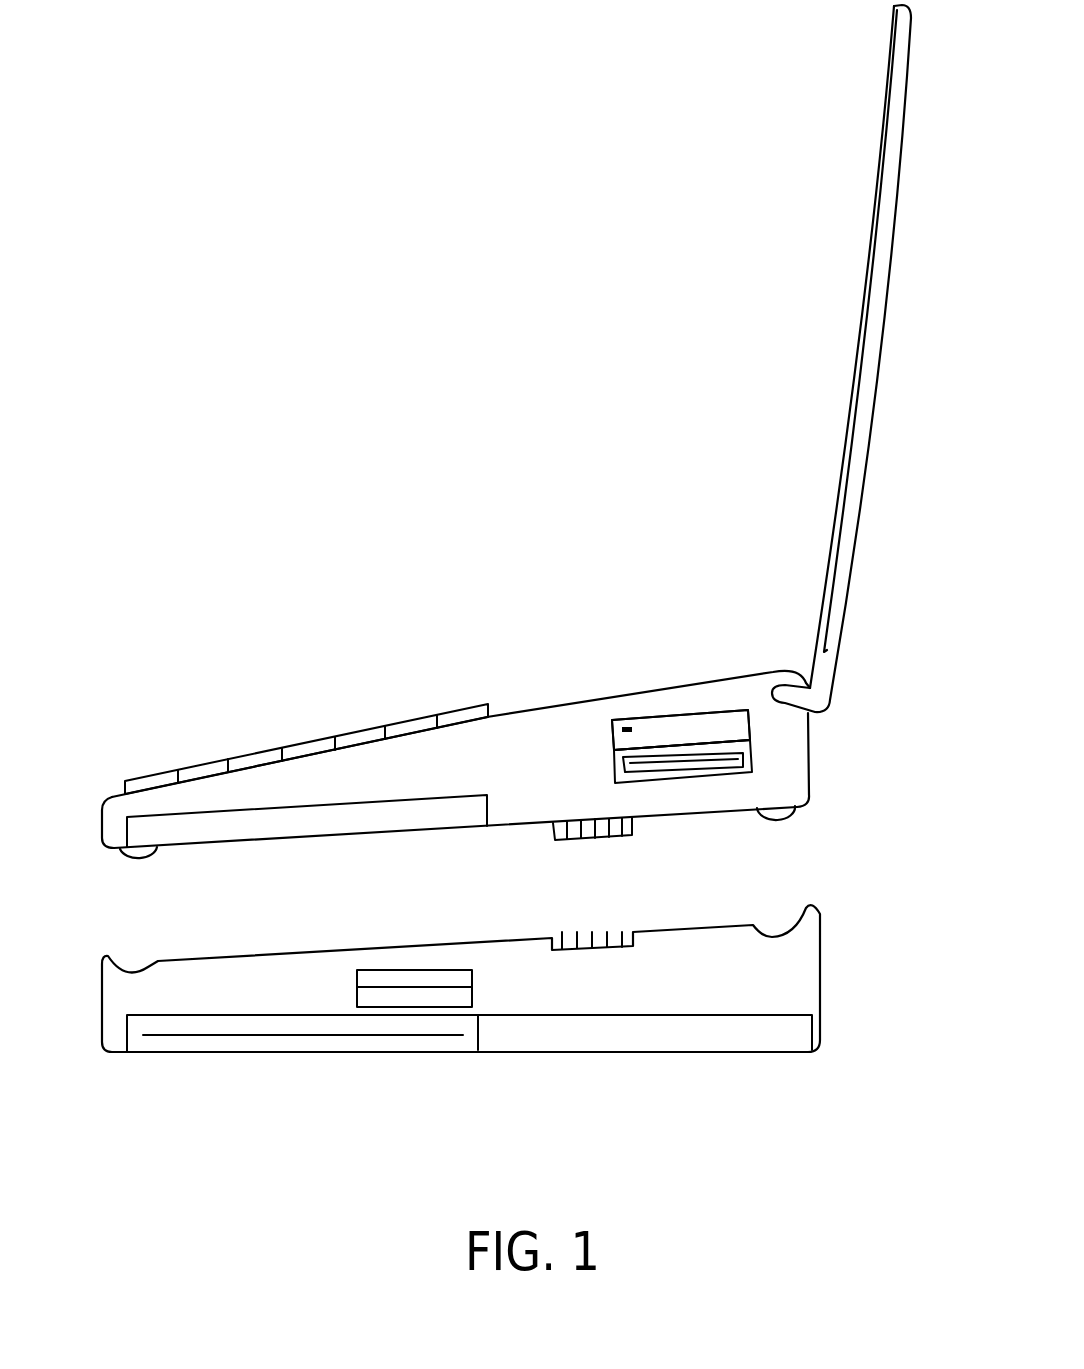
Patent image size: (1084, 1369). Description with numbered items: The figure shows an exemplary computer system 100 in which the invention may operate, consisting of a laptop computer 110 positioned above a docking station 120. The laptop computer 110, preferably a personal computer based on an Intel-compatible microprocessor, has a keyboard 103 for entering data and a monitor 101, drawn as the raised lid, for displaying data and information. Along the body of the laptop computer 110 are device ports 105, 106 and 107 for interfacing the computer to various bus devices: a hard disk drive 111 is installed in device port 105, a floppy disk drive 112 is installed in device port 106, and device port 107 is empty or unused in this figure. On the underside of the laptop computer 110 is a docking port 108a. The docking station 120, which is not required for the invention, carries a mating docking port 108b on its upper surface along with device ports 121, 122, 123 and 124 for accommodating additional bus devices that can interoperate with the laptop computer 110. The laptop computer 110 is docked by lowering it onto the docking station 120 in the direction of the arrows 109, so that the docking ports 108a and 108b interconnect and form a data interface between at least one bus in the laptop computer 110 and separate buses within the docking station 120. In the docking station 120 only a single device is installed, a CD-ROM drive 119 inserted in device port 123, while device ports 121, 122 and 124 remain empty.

The computer system 100 is at (128, 1168).
The monitor 101 is at (736, 361).
The keyboard 103 is at (288, 700).
The device port 105 is at (600, 739).
The device port 106 is at (600, 777).
The device port 107 is at (390, 788).
The docking port 108a is at (542, 853).
The docking port 108b is at (594, 915).
The arrows 109 is at (254, 863).
The laptop computer 110 is at (884, 737).
The hard disk drive 111 is at (686, 720).
The floppy disk drive 112 is at (736, 760).
The CD-ROM drive 119 is at (331, 1045).
The docking station 120 is at (884, 972).
The device port 121 is at (488, 978).
The device port 122 is at (345, 994).
The device port 123 is at (212, 1004).
The device port 124 is at (626, 1004).